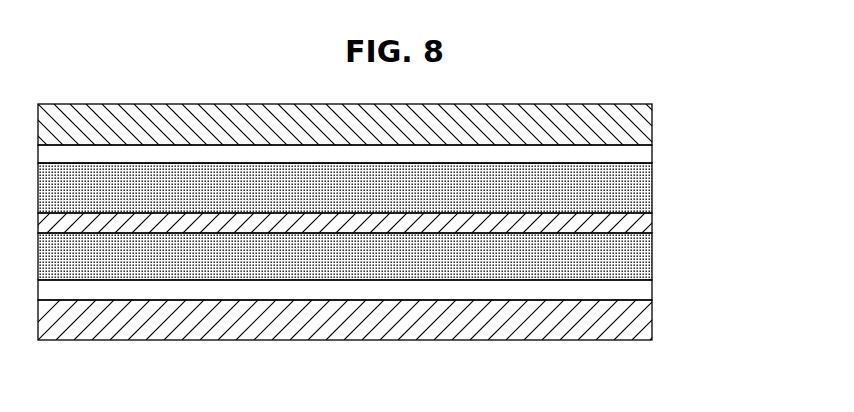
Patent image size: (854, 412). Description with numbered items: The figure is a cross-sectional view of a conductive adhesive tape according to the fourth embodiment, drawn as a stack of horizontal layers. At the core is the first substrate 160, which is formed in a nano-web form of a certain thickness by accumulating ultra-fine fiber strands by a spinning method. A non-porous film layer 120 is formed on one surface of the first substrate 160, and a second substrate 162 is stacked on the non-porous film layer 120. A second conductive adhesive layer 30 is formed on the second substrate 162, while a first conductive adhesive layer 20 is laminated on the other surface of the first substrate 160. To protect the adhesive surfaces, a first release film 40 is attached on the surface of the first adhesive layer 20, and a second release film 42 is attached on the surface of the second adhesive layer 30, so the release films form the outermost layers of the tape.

The first release film 40 is at (643, 127).
The second conductive adhesive layer 30 is at (652, 156).
The second substrate 162 is at (652, 188).
The non-porous film layer 120 is at (652, 220).
The first substrate 160 is at (652, 262).
The first conductive adhesive layer 20 is at (652, 285).
The second release film 42 is at (645, 304).